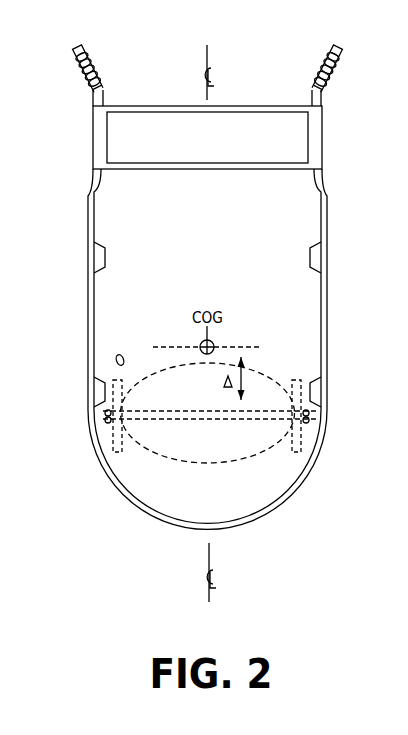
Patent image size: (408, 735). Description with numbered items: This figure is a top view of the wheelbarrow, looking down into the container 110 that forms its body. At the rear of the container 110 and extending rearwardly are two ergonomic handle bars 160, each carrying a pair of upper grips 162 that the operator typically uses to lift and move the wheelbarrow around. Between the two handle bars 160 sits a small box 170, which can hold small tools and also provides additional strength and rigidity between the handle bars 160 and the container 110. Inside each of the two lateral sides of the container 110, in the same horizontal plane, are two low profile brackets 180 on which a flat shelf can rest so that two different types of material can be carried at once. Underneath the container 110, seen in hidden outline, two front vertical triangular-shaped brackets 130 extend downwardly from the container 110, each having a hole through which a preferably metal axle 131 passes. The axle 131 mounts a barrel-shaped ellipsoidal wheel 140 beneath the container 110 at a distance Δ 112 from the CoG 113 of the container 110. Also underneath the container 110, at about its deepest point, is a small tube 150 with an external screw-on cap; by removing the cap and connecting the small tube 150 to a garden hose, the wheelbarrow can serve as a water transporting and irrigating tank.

The container 110 is at (329, 308).
The distance Δ 112 is at (249, 372).
The CoG 113 is at (197, 342).
The front vertical triangular-shaped brackets 130 is at (117, 438).
The axle 131 is at (187, 423).
The barrel-shaped ellipsoidal wheel 140 is at (272, 456).
The small tube 150 is at (113, 352).
The ergonomic handle bars 160 is at (105, 97).
The upper grips 162 is at (97, 64).
The small box 170 is at (145, 135).
The low profile brackets 180 is at (96, 258).